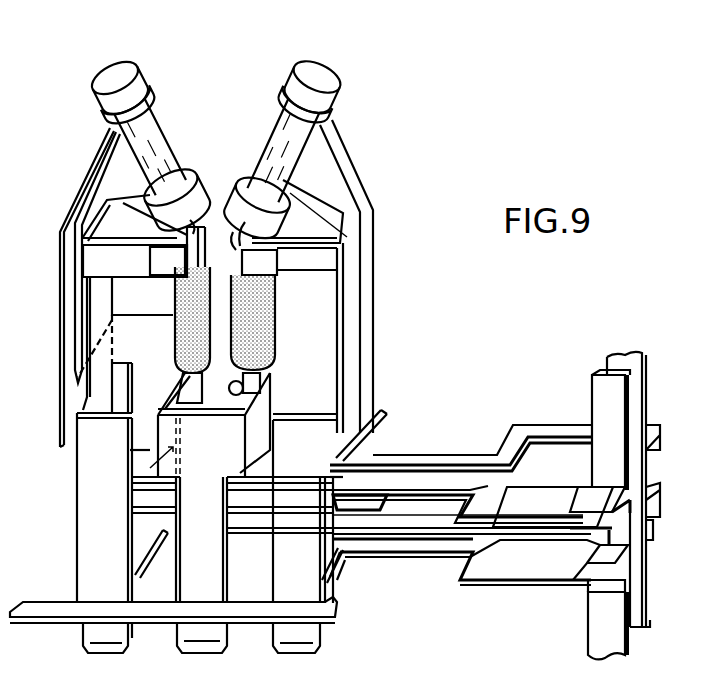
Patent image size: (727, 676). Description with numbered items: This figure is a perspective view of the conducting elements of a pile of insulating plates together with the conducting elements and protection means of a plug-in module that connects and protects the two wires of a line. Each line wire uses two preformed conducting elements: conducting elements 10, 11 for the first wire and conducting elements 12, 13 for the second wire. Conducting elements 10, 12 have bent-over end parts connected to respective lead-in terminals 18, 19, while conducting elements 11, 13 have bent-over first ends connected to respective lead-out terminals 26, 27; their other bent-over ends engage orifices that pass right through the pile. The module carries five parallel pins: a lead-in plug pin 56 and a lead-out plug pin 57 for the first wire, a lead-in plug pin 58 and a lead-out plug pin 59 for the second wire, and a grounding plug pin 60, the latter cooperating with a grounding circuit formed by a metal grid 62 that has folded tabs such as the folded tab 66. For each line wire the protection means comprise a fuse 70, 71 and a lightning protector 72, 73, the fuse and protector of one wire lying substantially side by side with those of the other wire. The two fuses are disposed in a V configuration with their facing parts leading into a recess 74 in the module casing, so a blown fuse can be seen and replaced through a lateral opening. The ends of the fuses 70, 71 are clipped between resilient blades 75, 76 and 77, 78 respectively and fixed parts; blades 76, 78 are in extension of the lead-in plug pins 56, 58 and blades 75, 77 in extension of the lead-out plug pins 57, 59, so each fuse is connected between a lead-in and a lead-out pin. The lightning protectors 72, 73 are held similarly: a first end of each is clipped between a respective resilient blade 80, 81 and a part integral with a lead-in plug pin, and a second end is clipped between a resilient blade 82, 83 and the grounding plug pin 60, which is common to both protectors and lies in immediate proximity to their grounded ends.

The conducting element 10 is at (425, 547).
The conducting element 11 is at (415, 463).
The conducting element 12 is at (387, 517).
The conducting element 13 is at (455, 490).
The lead-in terminal 18 is at (607, 617).
The lead-in terminal 19 is at (637, 578).
The lead-out terminal 26 is at (633, 387).
The lead-out terminal 27 is at (603, 410).
The lead-in plug pin 56 is at (298, 640).
The lead-out plug pin 57 is at (383, 433).
The lead-in plug pin 58 is at (100, 514).
The lead-out plug pin 59 is at (150, 398).
The grounding plug pin 60 is at (198, 550).
The metal grid 62 is at (68, 605).
The folded tab 66 is at (203, 633).
The fuse 70 is at (300, 95).
The fuse 71 is at (135, 92).
The lightning protector 72 is at (250, 322).
The lightning protector 73 is at (177, 312).
The recess 74 is at (216, 263).
The resilient blade 75 is at (330, 112).
The resilient blade 76 is at (278, 212).
The resilient blade 77 is at (98, 112).
The resilient blade 78 is at (160, 208).
The resilient blade 80 is at (255, 262).
The resilient blade 81 is at (160, 298).
The resilient blade 82 is at (262, 393).
The resilient blade 83 is at (207, 387).